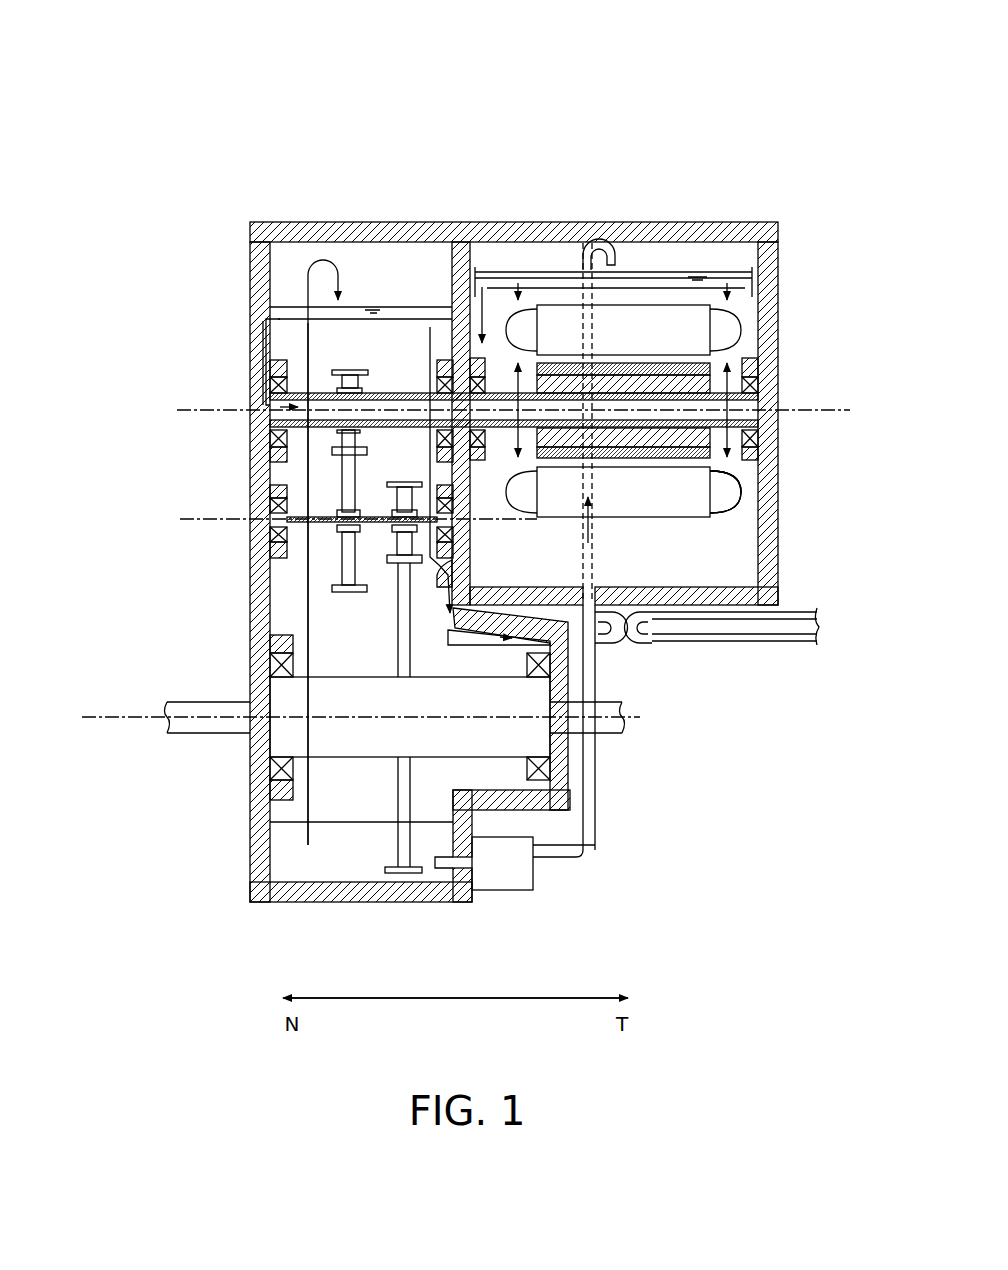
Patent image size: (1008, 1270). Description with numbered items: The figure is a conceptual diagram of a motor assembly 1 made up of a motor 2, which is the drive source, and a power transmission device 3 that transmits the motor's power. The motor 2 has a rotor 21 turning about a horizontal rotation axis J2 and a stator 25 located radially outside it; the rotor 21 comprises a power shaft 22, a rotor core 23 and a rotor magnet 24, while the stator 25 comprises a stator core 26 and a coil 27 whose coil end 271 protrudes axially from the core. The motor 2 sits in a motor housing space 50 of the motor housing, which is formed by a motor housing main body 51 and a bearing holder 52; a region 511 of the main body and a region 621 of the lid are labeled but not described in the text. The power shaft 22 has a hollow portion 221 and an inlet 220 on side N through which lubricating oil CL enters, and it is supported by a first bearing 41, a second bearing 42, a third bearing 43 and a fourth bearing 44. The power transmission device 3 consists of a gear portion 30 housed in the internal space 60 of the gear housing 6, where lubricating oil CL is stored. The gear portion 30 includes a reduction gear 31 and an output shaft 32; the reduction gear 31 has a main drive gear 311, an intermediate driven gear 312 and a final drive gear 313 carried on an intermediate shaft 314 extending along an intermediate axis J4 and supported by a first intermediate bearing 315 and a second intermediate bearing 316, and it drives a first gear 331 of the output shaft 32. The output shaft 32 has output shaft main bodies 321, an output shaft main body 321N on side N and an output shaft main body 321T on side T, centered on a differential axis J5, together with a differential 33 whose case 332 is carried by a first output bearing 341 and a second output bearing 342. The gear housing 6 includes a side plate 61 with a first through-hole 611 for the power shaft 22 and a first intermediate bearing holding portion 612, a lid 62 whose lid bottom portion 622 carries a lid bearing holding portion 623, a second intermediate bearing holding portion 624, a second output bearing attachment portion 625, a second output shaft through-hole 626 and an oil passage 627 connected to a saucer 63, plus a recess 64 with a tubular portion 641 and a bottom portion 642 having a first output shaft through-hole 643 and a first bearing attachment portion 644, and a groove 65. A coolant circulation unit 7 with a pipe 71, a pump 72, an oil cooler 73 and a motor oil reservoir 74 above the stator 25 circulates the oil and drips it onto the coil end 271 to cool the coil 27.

The motor assembly 1 is at (685, 107).
The motor 2 is at (721, 205).
The power transmission device 3 is at (387, 222).
The gear housing 6 is at (246, 226).
The coolant circulation unit 7 is at (627, 770).
The rotor 21 is at (676, 434).
The power shaft 22 is at (657, 375).
The rotor core 23 is at (618, 363).
The rotor magnet 24 is at (560, 363).
The stator 25 is at (745, 487).
The stator core 26 is at (687, 505).
The coil 27 is at (723, 500).
The gear portion 30 is at (295, 608).
The reduction gear 31 is at (372, 372).
The output shaft 32 is at (388, 736).
The differential 33 is at (371, 670).
The first bearing 41 is at (268, 436).
The second bearing 42 is at (432, 369).
The third bearing 43 is at (778, 444).
The fourth bearing 44 is at (480, 355).
The motor housing space 50 is at (732, 560).
The motor housing main body 51 is at (613, 222).
The bearing holder 52 is at (778, 248).
The internal space 60 is at (344, 258).
The side plate 61 is at (445, 262).
The lid 62 is at (262, 222).
The saucer 63 is at (360, 318).
The recess 64 is at (502, 779).
The groove 65 is at (460, 642).
The pipe 71 is at (592, 558).
The pump 72 is at (493, 879).
The oil cooler 73 is at (663, 646).
The motor oil reservoir 74 is at (577, 268).
The inlet 220 is at (275, 416).
The hollow portion 221 is at (398, 400).
The coil end 271 is at (743, 497).
The main drive gear 311 is at (349, 371).
The intermediate driven gear 312 is at (340, 594).
The final drive gear 313 is at (400, 482).
The intermediate shaft 314 is at (300, 510).
The first intermediate bearing 315 is at (453, 533).
The second intermediate bearing 316 is at (268, 536).
The output shaft main body 321 is at (165, 728).
The output shaft main body on one side N 321N is at (185, 729).
The output shaft main body on the other side T 321T is at (610, 729).
The first gear 331 is at (405, 874).
The case 332 is at (350, 750).
The first output bearing 341 is at (527, 757).
The second output bearing 342 is at (252, 800).
The inner surface of upper wall 511 is at (682, 230).
The first through-hole 611 is at (470, 330).
The first intermediate bearing holding portion 612 is at (455, 566).
The top wall 621 is at (297, 230).
The lid bottom portion 622 is at (250, 262).
The lid bearing holding portion 623 is at (267, 365).
The second intermediate bearing holding portion 624 is at (276, 495).
The second output bearing attachment portion 625 is at (280, 648).
The second output shaft through-hole 626 is at (250, 697).
The oil passage 627 is at (268, 318).
The tubular portion 641 is at (532, 806).
The bottom portion 642 is at (558, 686).
The first output shaft through-hole 643 is at (588, 771).
The first bearing attachment portion 644 is at (593, 816).
The rotation axis J2 is at (828, 410).
The intermediate axis J4 is at (193, 523).
The differential axis J5 is at (103, 715).
The lubricating oil CL is at (290, 318).